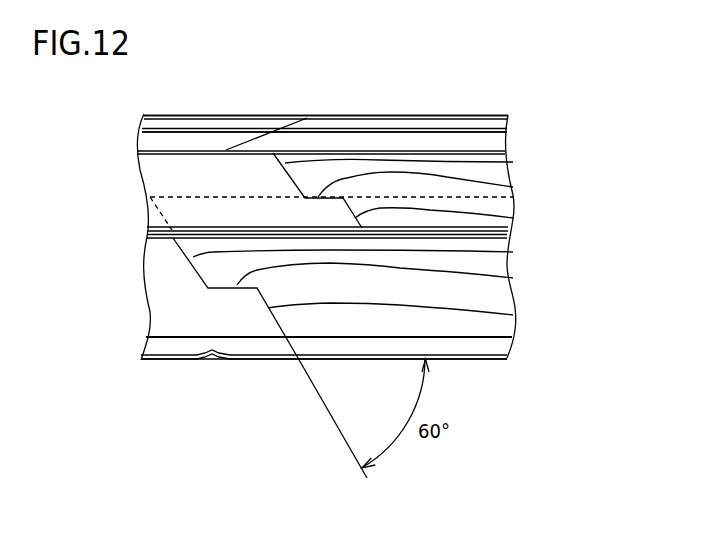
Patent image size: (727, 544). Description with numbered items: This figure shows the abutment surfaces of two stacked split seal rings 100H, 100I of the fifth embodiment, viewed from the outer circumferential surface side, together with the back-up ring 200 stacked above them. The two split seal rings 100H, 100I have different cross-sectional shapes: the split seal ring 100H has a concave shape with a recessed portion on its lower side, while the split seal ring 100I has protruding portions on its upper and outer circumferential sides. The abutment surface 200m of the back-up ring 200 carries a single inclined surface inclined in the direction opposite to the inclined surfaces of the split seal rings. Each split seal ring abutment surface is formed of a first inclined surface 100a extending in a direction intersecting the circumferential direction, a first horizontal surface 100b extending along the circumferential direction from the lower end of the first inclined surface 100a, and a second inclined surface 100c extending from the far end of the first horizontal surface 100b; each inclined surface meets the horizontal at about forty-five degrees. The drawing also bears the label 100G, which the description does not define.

The back-up ring 200 is at (183, 138).
The abutment surface of back-up ring 200m is at (257, 138).
The split seal ring 100H is at (163, 182).
The split seal ring 100I is at (163, 288).
The base layer 100G is at (172, 360).
The first inclined surface 100a is at (513, 162).
The first horizontal surface 100b is at (513, 187).
The second inclined surface 100c is at (513, 218).